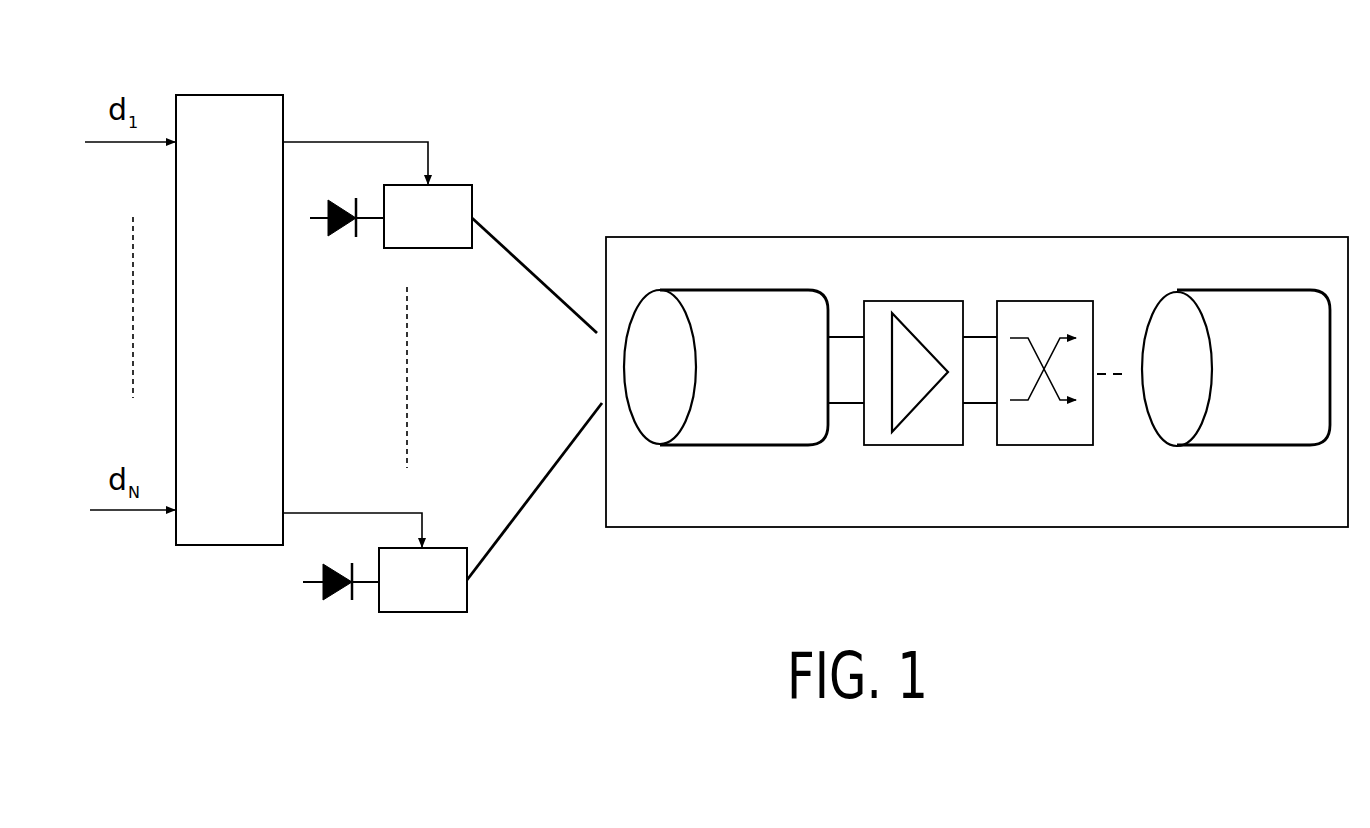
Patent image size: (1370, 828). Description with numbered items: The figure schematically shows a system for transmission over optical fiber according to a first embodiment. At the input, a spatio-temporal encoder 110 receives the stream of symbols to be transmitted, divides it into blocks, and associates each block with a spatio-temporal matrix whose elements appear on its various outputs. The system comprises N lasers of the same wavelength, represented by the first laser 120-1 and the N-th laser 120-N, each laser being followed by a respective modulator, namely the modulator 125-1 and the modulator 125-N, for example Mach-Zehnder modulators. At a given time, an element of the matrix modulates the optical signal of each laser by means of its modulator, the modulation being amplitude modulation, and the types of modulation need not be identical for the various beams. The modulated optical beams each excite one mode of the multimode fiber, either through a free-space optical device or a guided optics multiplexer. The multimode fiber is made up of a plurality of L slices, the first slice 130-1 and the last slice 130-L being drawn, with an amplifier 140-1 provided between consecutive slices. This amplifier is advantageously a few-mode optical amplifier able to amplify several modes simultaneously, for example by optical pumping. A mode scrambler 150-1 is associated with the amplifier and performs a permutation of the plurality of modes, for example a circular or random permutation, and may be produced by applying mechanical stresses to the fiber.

The spatio-temporal encoder 110 is at (247, 123).
The laser 120-1 is at (348, 205).
The laser 120-N is at (325, 597).
The modulator 125-1 is at (443, 200).
The modulator 125-N is at (438, 613).
The slice of multimode fiber 130-1 is at (727, 290).
The slice of multimode fiber 130-L is at (1262, 290).
The amplifier 140-1 is at (918, 300).
The mode scrambler 150-1 is at (1045, 300).